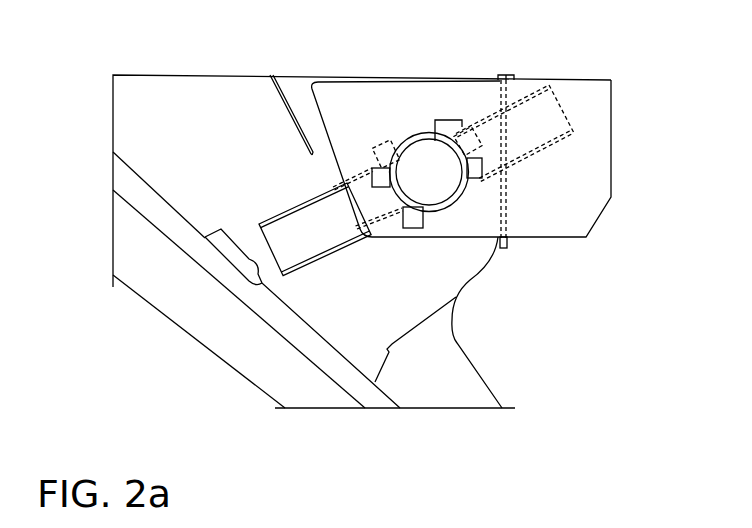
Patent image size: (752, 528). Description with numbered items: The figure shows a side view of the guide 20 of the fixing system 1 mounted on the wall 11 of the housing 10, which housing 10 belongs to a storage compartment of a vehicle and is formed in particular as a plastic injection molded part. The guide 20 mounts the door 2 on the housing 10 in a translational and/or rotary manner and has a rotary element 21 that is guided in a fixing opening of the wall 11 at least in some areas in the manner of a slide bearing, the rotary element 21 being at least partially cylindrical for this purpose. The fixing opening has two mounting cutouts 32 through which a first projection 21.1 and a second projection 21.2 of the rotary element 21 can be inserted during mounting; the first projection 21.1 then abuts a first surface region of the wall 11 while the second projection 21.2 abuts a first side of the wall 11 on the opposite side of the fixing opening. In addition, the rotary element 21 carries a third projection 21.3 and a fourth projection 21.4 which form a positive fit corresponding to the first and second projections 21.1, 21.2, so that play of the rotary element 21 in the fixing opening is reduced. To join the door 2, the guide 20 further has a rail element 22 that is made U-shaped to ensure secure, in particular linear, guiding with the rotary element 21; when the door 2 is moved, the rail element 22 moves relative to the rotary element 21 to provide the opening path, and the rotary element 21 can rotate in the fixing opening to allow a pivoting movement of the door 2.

The fixing system 1 is at (130, 121).
The door 2 is at (208, 328).
The housing 10 is at (598, 270).
The wall 11 is at (590, 99).
The guide 20 is at (342, 312).
The rotary element 21 is at (440, 190).
The first projection 21.1 is at (527, 100).
The second projection 21.2 is at (334, 124).
The third projection 21.3 is at (466, 143).
The fourth projection 21.4 is at (386, 153).
The rail element 22 is at (308, 231).
The mounting cutout 32 is at (449, 124).